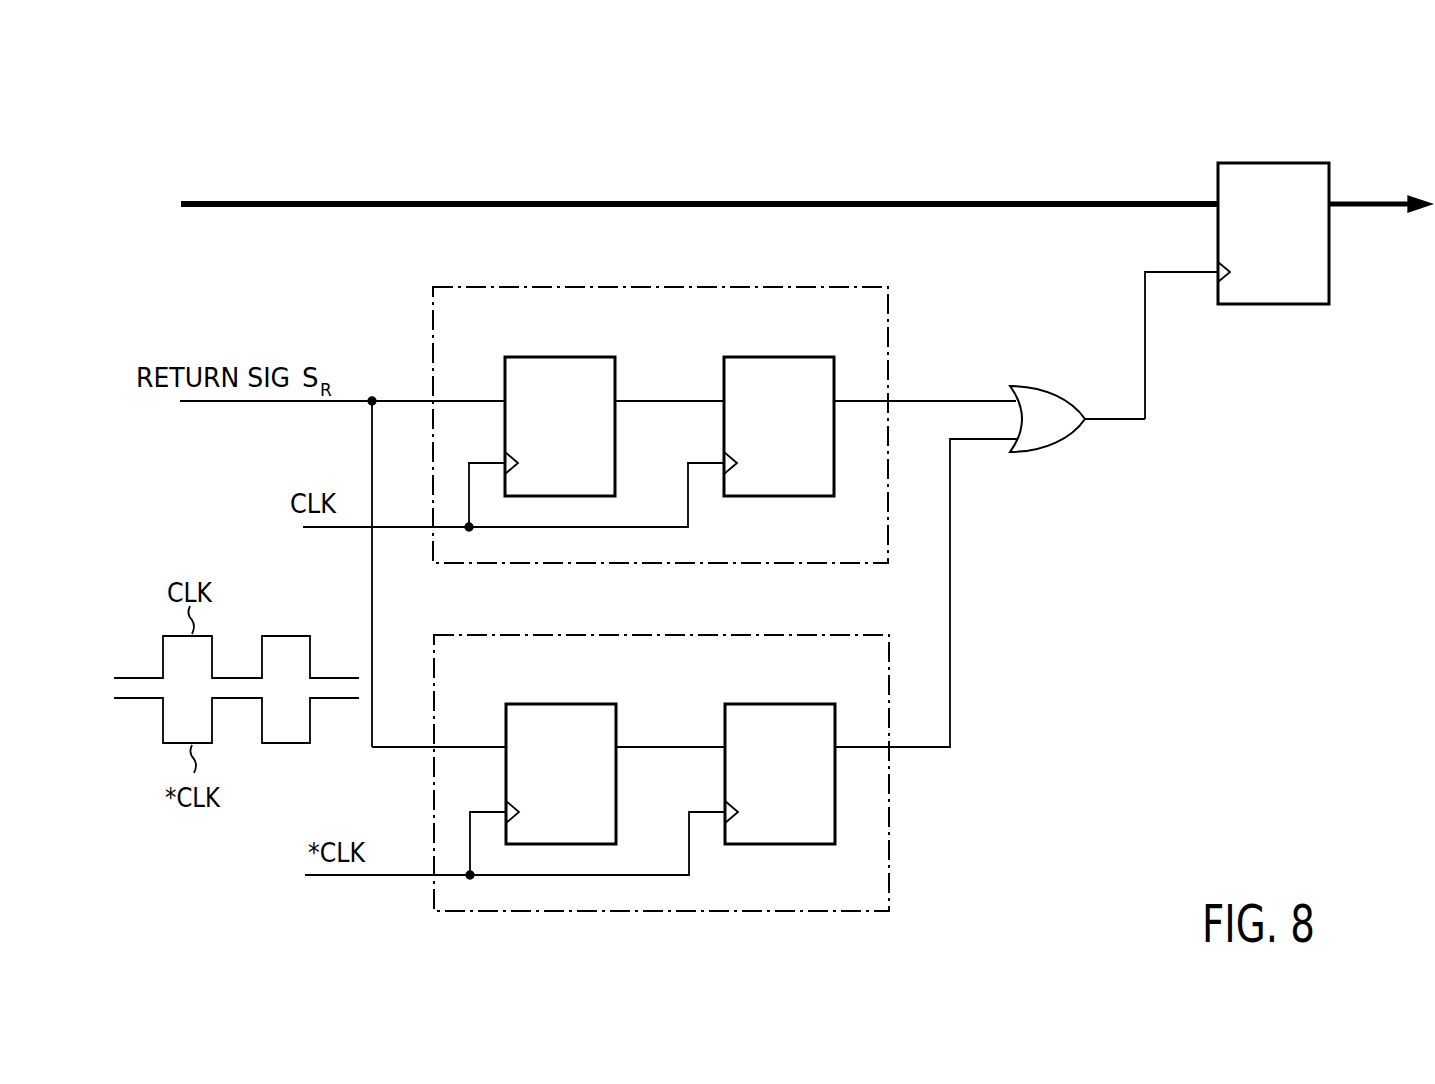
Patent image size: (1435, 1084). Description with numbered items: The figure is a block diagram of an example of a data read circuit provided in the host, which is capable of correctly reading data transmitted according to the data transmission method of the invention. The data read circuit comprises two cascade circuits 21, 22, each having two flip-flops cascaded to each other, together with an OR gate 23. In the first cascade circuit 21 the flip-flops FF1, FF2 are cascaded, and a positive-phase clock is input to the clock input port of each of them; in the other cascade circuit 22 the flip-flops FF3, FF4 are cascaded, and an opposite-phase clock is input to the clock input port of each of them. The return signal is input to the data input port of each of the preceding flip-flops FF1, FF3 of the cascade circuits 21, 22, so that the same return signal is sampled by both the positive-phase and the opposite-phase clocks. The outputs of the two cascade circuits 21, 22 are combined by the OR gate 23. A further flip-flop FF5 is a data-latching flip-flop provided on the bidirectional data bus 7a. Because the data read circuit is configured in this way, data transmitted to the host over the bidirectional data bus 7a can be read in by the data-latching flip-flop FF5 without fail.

The bidirectional data bus 7a is at (502, 202).
The cascade circuit 21 is at (660, 396).
The cascade circuit 22 is at (661, 744).
The OR gate 23 is at (1040, 385).
The flip-flop FF1 is at (563, 355).
The flip-flop FF2 is at (785, 355).
The flip-flop FF3 is at (563, 702).
The flip-flop FF4 is at (785, 702).
The data-latching flip-flop FF5 is at (1278, 162).